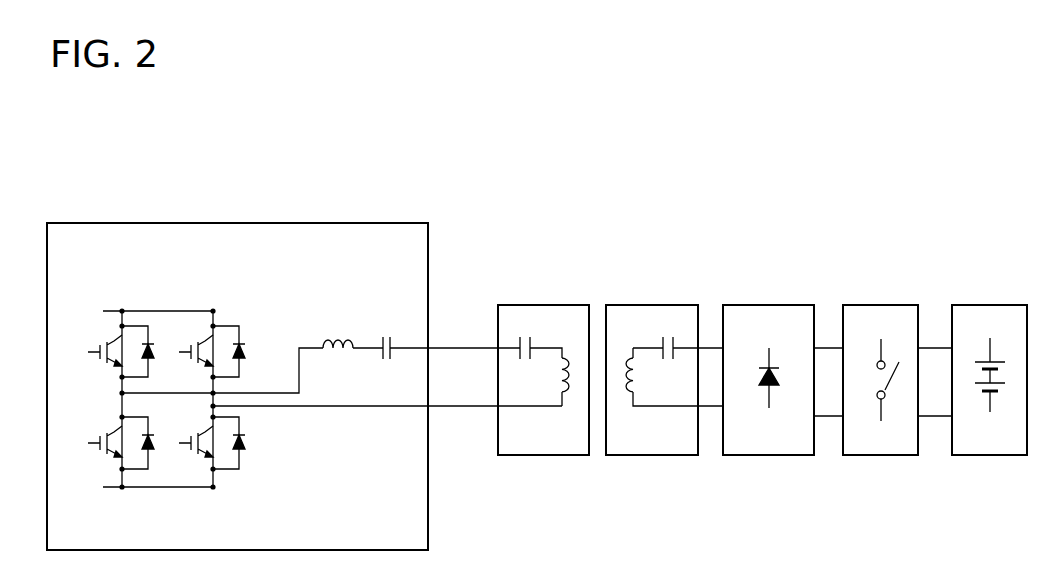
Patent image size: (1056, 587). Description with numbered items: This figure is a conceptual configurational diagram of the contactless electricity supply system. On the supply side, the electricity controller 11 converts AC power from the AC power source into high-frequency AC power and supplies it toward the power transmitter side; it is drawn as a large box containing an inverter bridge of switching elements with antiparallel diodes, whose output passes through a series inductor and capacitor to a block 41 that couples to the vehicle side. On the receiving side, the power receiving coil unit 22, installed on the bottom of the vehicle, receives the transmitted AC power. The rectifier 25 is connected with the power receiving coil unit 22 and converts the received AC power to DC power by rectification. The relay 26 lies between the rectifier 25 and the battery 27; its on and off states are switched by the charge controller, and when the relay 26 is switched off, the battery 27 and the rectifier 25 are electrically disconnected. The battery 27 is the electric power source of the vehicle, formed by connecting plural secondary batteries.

The electricity controller 11 is at (327, 222).
The power transmission resonance circuit 41 is at (548, 303).
The power receiving coil unit 22 is at (656, 303).
The rectifier 25 is at (774, 303).
The relay 26 is at (878, 303).
The battery 27 is at (986, 303).